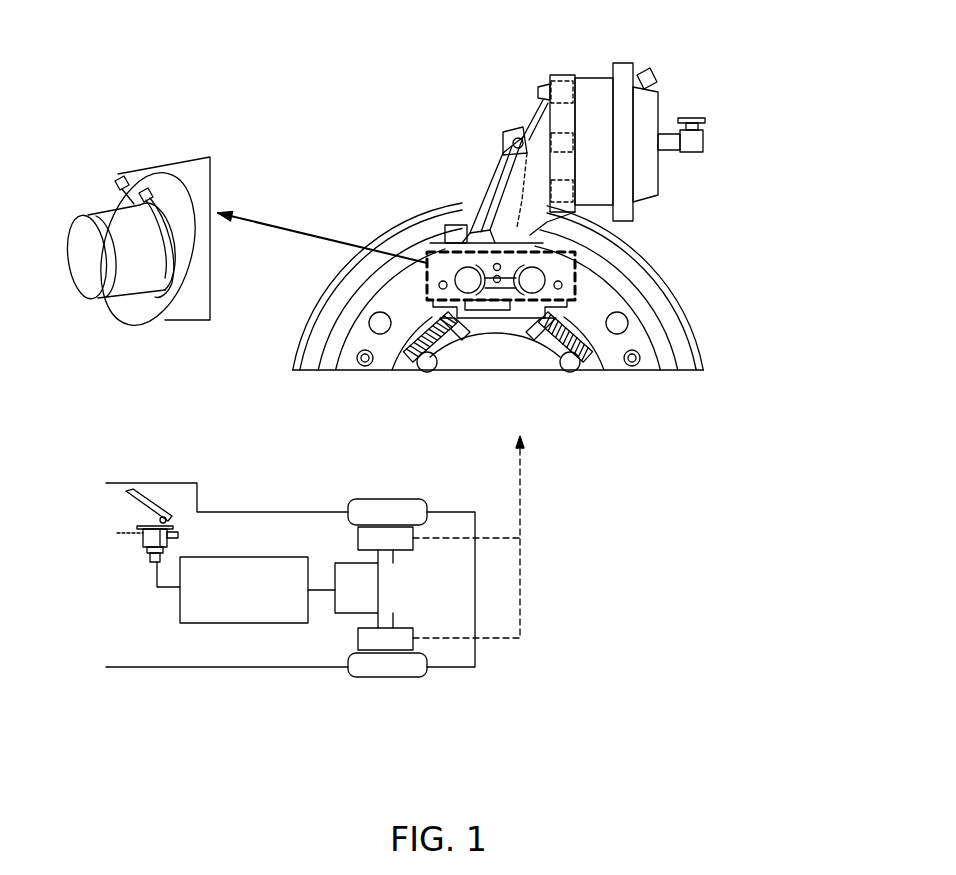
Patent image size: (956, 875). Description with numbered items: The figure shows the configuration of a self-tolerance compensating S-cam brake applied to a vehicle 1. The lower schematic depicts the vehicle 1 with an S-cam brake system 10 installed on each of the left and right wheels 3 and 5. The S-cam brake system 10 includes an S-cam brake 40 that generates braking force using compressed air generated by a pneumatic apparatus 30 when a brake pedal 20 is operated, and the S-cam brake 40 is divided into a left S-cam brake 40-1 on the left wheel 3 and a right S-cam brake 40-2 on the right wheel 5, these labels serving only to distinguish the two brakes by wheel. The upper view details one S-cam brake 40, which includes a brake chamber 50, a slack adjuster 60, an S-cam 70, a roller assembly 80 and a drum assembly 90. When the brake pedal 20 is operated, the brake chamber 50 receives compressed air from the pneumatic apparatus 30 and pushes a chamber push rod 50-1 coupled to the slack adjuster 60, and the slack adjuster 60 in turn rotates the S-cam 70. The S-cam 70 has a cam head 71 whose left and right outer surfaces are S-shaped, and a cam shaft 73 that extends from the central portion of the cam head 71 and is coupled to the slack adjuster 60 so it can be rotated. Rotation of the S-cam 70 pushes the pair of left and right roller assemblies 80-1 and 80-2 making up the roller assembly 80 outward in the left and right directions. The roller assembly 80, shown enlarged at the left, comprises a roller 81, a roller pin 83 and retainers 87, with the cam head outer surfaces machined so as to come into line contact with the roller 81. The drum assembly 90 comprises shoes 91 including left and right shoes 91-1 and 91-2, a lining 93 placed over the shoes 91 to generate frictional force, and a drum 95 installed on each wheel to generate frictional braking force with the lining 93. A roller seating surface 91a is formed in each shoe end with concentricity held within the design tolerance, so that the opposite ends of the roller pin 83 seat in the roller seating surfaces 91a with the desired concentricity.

The vehicle 1 is at (195, 697).
The left wheel 3 is at (385, 499).
The right wheel 5 is at (392, 677).
The S-cam brake system 10 is at (106, 612).
The brake pedal 20 is at (150, 505).
The pneumatic apparatus 30 is at (255, 557).
The S-cam brake 40 is at (750, 208).
The left S-cam brake 40-1 is at (430, 513).
The right S-cam brake 40-2 is at (427, 663).
The brake chamber 50 is at (637, 108).
The chamber push rod 50-1 is at (550, 140).
The slack adjuster 60 is at (500, 173).
The S-cam 70 is at (466, 191).
The cam head 71 is at (465, 240).
The cam shaft 73 is at (445, 228).
The roller assembly 80 is at (229, 192).
The left roller assembly 80-1 is at (410, 325).
The right roller assembly 80-2 is at (573, 250).
The roller 81 is at (180, 178).
The roller pin 83 is at (105, 223).
The retainers 87 is at (118, 182).
The drum assembly 90 is at (586, 289).
The shoes 91 is at (584, 311).
The roller seating surface 91a is at (657, 272).
The left shoe 91-1 is at (600, 355).
The right shoe 91-2 is at (628, 338).
The lining 93 is at (640, 310).
The drum 95 is at (645, 283).